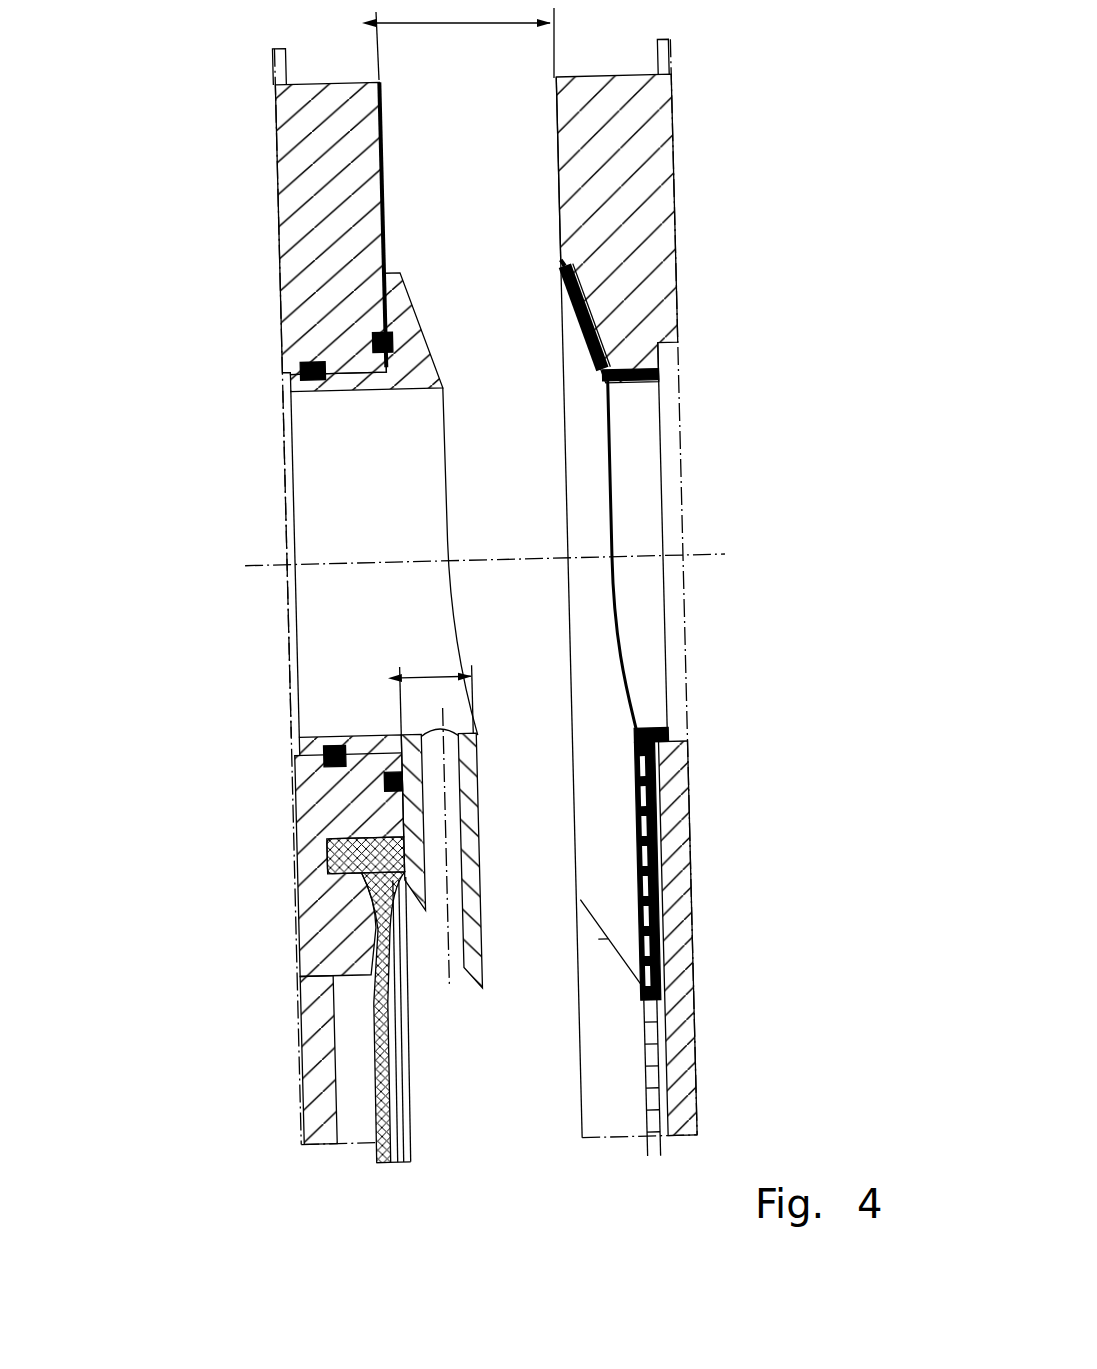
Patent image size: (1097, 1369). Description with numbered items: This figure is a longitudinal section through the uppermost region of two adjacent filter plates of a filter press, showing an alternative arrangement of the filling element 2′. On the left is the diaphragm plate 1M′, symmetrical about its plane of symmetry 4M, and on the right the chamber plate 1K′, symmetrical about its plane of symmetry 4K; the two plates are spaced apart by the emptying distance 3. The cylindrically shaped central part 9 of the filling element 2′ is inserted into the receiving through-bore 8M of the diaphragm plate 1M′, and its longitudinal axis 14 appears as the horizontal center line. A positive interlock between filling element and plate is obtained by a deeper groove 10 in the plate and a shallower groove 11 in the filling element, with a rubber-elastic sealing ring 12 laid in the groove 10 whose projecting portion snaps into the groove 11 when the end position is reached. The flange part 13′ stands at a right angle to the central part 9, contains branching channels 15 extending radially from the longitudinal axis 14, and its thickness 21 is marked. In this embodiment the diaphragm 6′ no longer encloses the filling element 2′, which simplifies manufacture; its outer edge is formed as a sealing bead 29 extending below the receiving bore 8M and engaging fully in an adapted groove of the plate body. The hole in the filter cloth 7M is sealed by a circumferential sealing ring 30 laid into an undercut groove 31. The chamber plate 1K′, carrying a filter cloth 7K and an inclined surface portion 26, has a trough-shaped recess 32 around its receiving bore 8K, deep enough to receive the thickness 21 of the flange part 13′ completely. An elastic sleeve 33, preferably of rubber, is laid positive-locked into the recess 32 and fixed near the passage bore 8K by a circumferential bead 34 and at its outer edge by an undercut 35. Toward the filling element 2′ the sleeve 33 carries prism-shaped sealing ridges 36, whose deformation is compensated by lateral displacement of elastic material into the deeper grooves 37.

The diaphragm plate 1M′ is at (228, 100).
The chamber plate 1K′ is at (722, 80).
The emptying distance 3 is at (471, 24).
The filling element 2′ is at (410, 273).
The flange part 13′ is at (385, 308).
The undercut groove 31 is at (377, 335).
The groove 10 is at (285, 333).
The groove 11 is at (291, 432).
The receiving through-bore 8M is at (292, 472).
The longitudinal axis 14 is at (416, 529).
The central part 9 is at (300, 737).
The sealing ring 12 is at (228, 745).
The circumferential sealing ring 30 is at (257, 785).
The branching channels 15 is at (327, 840).
The sealing bead 29 is at (337, 865).
The plane of symmetry 4M is at (300, 953).
The diaphragm 6′ is at (370, 1040).
The filter cloth 7M is at (264, 1164).
The thickness 21 is at (473, 784).
The undercut 35 is at (547, 1068).
The sealing ridges 36 is at (622, 282).
The deeper grooves 37 is at (645, 318).
The trough-shaped recess 32 is at (572, 272).
The elastic sleeve 33 is at (570, 305).
The circumferential bead 34 is at (650, 343).
The receiving bore 8K is at (668, 460).
The plane of symmetry 4K is at (700, 940).
The surface portion 26 is at (580, 963).
The filter cloth 7K is at (648, 1160).